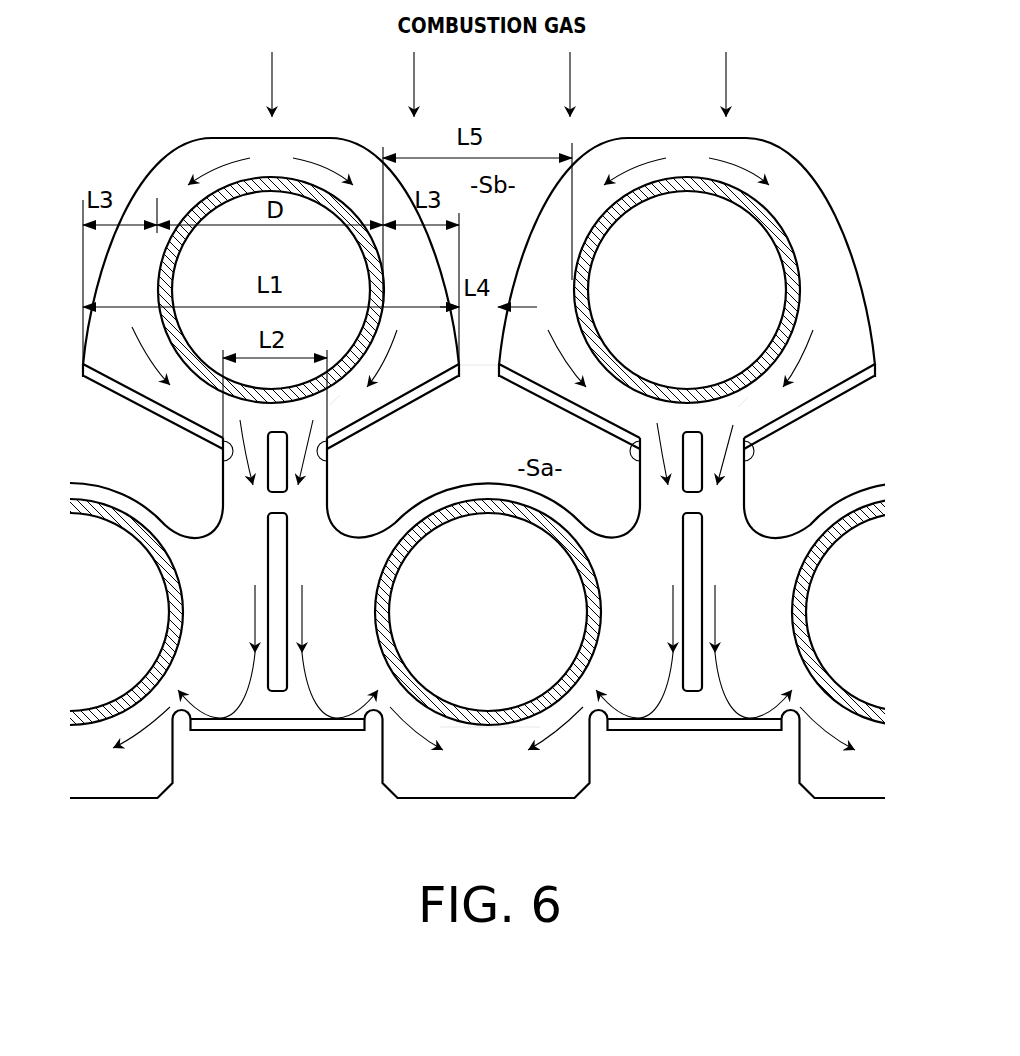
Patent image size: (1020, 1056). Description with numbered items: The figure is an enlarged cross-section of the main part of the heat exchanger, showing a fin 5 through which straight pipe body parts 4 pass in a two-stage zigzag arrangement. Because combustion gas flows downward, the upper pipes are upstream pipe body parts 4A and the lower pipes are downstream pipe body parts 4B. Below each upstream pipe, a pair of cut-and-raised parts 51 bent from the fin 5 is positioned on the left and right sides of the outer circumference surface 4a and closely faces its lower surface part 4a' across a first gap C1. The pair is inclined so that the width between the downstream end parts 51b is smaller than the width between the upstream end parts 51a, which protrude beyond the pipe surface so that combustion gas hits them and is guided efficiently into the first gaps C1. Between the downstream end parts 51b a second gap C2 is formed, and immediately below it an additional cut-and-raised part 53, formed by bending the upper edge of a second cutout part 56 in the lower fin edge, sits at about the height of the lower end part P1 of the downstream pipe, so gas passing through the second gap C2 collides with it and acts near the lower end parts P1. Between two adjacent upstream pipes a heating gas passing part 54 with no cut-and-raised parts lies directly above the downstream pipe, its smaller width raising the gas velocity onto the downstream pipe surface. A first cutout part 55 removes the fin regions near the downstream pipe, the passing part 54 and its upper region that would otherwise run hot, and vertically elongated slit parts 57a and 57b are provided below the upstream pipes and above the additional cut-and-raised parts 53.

The pipe body part 4 is at (509, 413).
The upstream pipe body part 4A is at (197, 210).
The downstream pipe body part 4B is at (588, 585).
The outer circumference surface 4a is at (712, 244).
The lower surface part 4a' is at (570, 434).
The fin 5 is at (856, 253).
The cut-and-raised part 51 is at (198, 430).
The upstream end part 51a is at (83, 368).
The downstream end part 51b is at (227, 458).
The additional cut-and-raised part 53 is at (275, 728).
The heating gas passing part 54 is at (500, 394).
The first cutout part 55 is at (570, 495).
The second cutout part 56 is at (302, 745).
The slit part 57a is at (278, 482).
The slit part 57b is at (272, 560).
The lower end part P1 is at (485, 728).
The first gap C1 is at (188, 398).
The second gap C2 is at (243, 465).